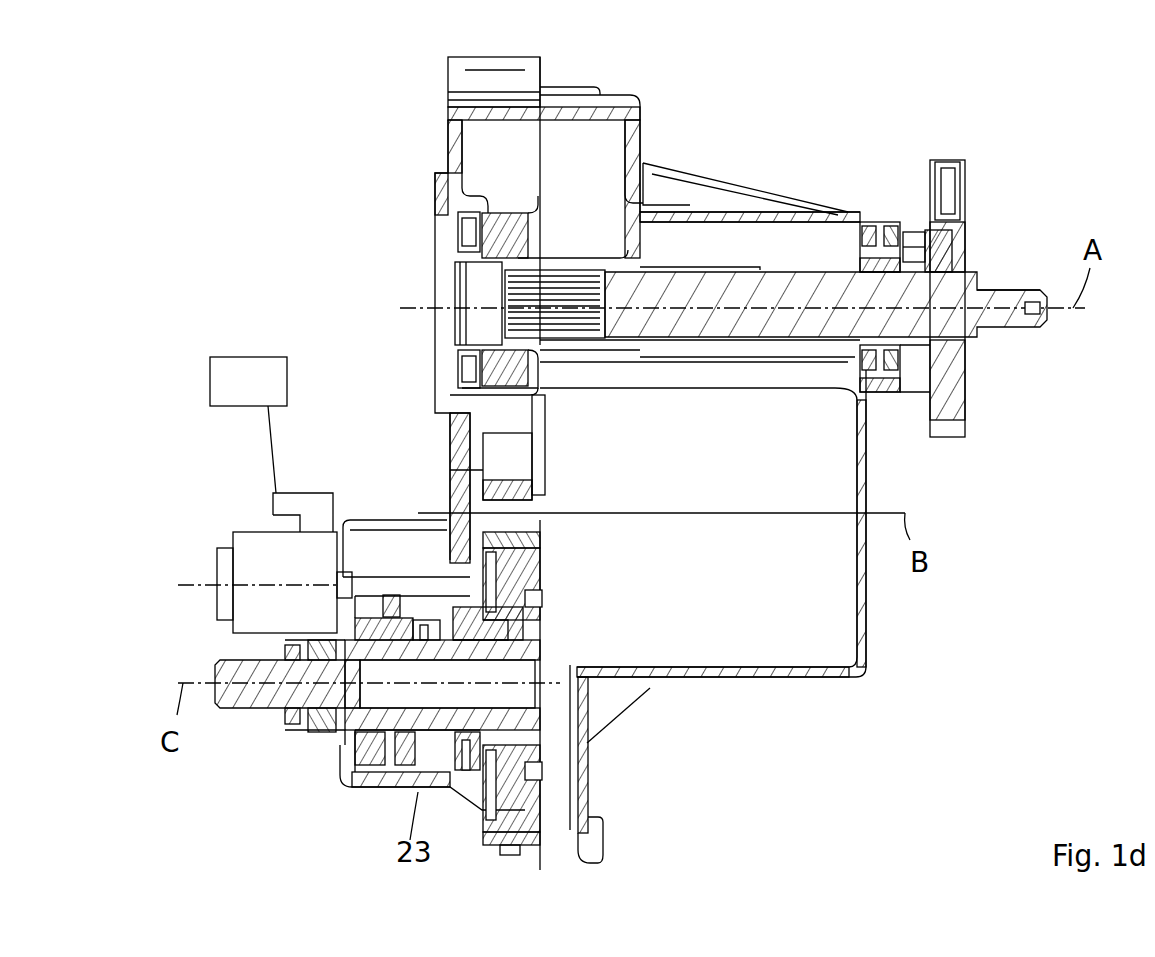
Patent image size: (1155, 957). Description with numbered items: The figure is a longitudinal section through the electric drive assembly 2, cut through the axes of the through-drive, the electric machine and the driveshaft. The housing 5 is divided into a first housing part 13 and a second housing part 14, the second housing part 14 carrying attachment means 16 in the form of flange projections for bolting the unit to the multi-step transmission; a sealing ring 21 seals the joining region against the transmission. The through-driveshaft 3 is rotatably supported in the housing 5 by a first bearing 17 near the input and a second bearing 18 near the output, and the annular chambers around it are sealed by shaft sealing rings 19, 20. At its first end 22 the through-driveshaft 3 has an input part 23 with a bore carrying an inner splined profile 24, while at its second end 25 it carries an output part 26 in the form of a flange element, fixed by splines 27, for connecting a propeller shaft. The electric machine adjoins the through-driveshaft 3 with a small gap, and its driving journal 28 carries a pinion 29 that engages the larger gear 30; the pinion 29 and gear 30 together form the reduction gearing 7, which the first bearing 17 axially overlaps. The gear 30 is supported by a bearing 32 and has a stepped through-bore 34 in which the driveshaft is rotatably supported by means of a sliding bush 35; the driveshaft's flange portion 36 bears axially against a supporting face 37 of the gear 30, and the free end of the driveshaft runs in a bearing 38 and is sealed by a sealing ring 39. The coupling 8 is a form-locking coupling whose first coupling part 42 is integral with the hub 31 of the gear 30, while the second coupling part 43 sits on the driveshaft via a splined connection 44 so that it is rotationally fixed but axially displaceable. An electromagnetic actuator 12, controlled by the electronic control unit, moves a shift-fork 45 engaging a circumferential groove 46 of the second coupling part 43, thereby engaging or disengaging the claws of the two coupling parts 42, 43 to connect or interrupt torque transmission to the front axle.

The electric drive assembly 2 is at (186, 166).
The through-driveshaft 3 is at (782, 262).
The housing 5 is at (554, 103).
The reduction gearing 7 is at (542, 545).
The coupling 8 is at (430, 762).
The actuator 12 is at (248, 540).
The first housing part 13 is at (618, 103).
The second housing part 14 is at (452, 118).
The attachment means 16 is at (452, 78).
The first bearing 17 is at (492, 216).
The second bearing 18 is at (875, 233).
The shaft sealing ring 19 is at (456, 236).
The shaft sealing ring 20 is at (915, 240).
The sealing ring 21 is at (456, 397).
The first end 22 is at (456, 352).
The input part 23 is at (470, 290).
The inner splined profile 24 is at (570, 282).
The second end 25 is at (1000, 318).
The output part 26 is at (958, 385).
The splines 27 is at (920, 262).
The driving journal 28 is at (462, 506).
The pinion 29 is at (520, 478).
The gear 30 is at (517, 563).
The hub 31 is at (480, 648).
The bearing 32 is at (476, 776).
The stepped through-bore 34 is at (515, 640).
The sliding bush 35 is at (565, 720).
The flange portion 36 is at (535, 766).
The supporting face 37 is at (530, 600).
The bearing 38 is at (320, 740).
The sealing ring 39 is at (280, 738).
The first coupling part 42 is at (440, 640).
The second coupling part 43 is at (424, 640).
The splined connection 44 is at (392, 640).
The shift-fork 45 is at (390, 600).
The circumferential groove 46 is at (393, 766).